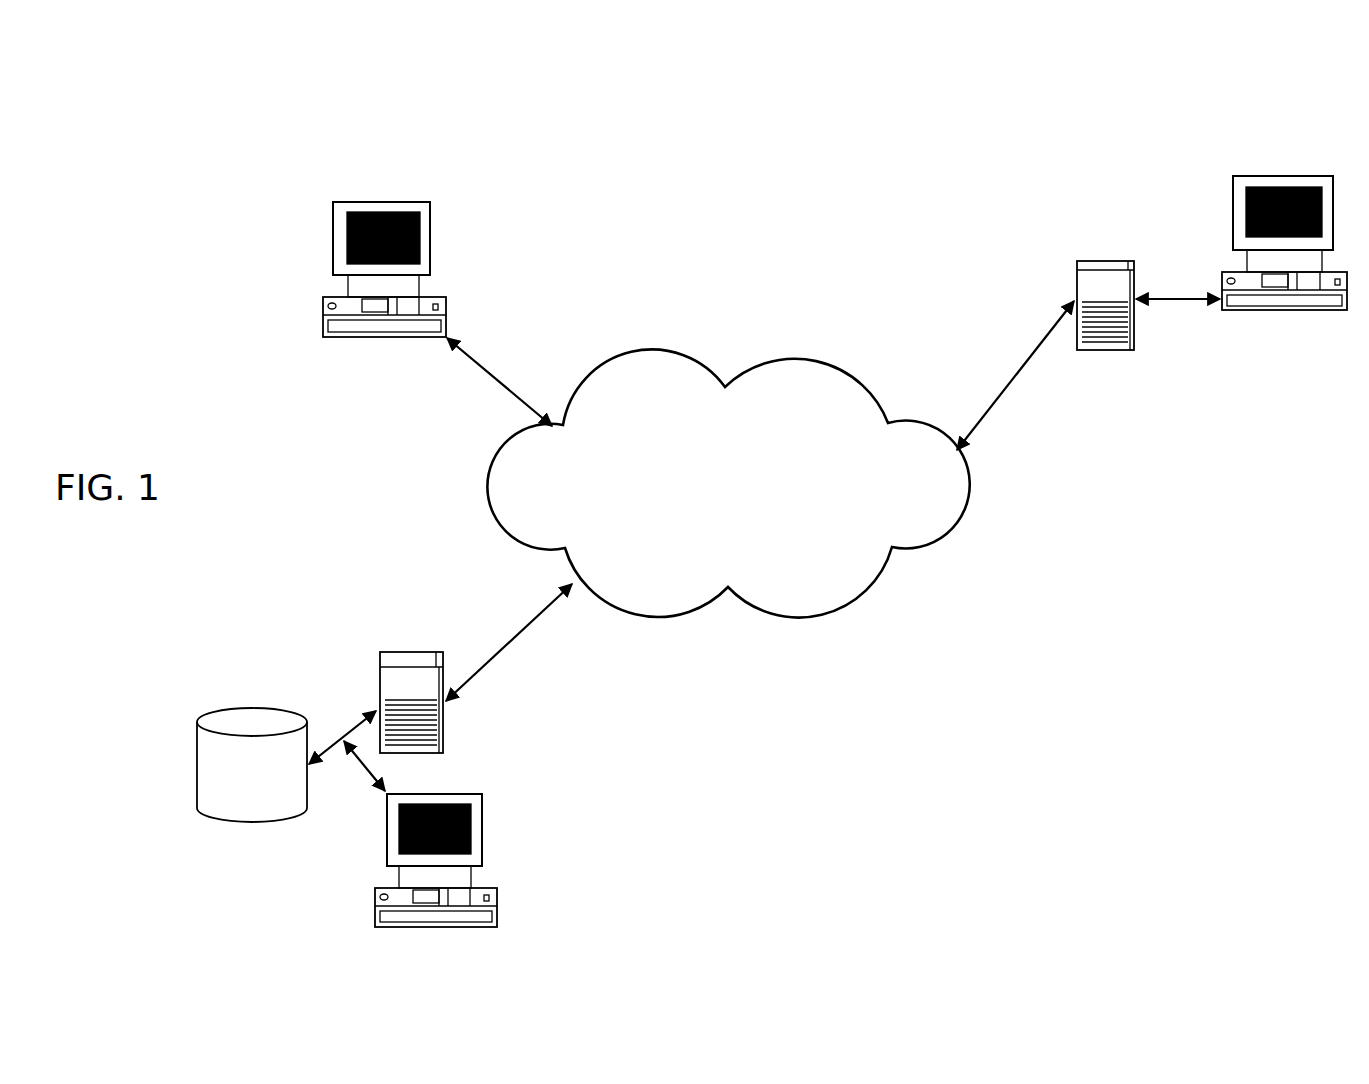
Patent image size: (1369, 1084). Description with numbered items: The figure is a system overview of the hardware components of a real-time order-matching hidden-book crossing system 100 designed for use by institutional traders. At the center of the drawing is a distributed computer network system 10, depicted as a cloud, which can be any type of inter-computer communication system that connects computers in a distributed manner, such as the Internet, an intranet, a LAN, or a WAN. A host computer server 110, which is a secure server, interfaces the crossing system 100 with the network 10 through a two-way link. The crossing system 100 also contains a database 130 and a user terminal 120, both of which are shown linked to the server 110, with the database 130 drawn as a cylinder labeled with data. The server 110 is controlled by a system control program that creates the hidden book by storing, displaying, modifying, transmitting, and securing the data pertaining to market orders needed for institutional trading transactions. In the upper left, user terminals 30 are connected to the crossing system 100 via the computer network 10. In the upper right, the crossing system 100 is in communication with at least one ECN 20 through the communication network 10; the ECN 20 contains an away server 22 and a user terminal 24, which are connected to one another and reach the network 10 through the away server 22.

The distributed computer network system 10 is at (681, 477).
The ECN 20 is at (1188, 394).
The away server 22 is at (1108, 283).
The user terminal 24 is at (1283, 187).
The user terminals 30 is at (392, 212).
The hidden-book crossing system 100 is at (245, 583).
The host computer server 110 is at (412, 680).
The user terminal 120 is at (472, 826).
The database 130 is at (255, 722).